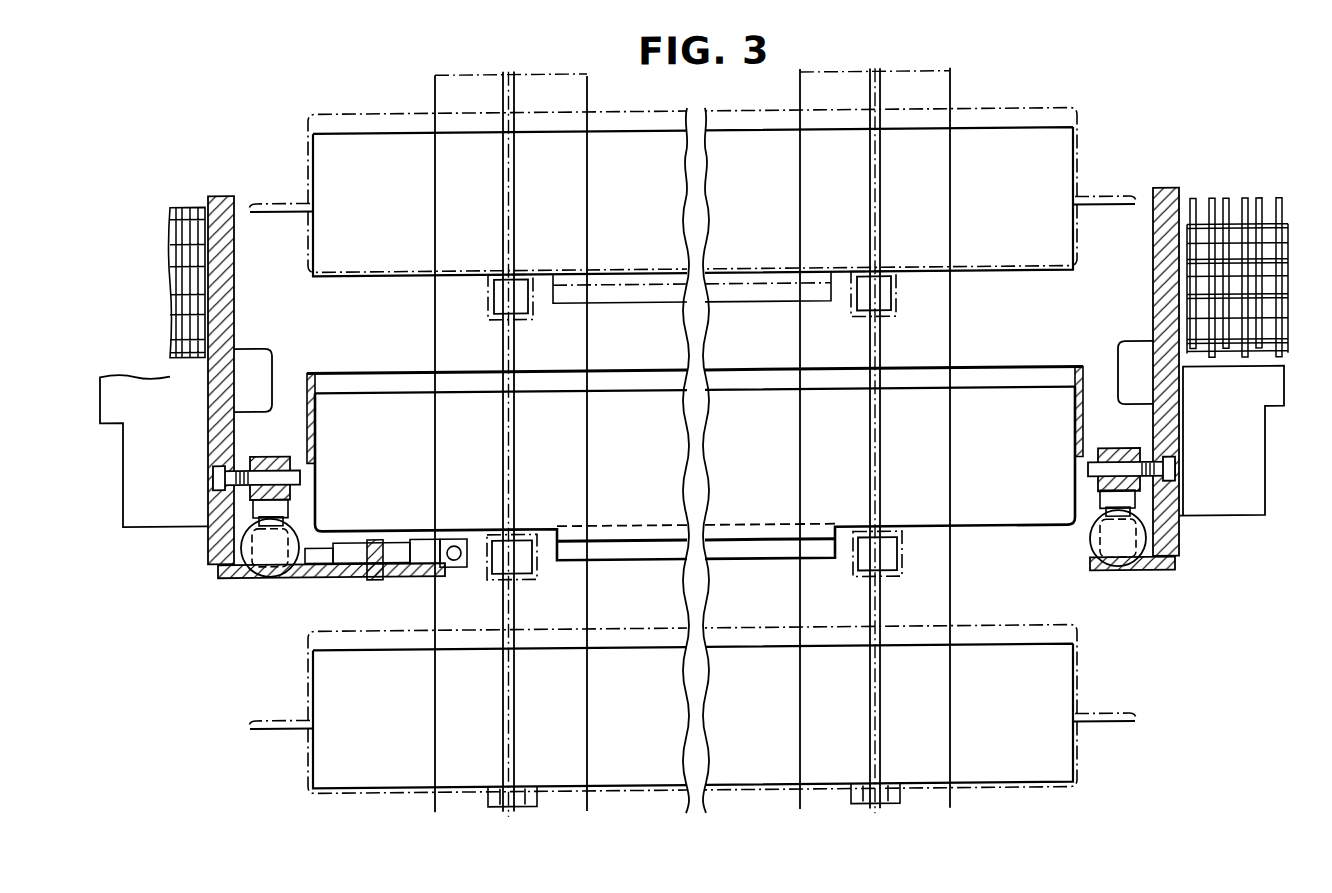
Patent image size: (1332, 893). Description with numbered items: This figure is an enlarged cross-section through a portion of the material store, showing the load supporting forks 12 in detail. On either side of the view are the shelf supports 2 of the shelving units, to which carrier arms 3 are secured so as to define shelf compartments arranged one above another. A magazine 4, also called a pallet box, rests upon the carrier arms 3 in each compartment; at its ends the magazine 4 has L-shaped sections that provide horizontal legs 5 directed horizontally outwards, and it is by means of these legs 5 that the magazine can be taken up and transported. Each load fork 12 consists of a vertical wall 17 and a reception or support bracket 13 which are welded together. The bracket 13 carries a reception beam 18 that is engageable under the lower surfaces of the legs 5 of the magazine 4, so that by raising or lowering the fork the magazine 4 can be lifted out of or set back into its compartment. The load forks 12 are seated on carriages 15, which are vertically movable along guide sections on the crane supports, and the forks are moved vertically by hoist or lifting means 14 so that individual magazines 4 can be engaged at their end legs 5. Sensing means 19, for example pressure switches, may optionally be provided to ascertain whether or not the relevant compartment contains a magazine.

The shelf support 2 is at (437, 88).
The carrier arm 3 is at (492, 298).
The magazine 4 is at (1033, 144).
The horizontal leg 5 is at (276, 204).
The load fork 12 is at (206, 544).
The reception bracket 13 is at (310, 575).
The hoist means 14 is at (172, 268).
The carriage 15 is at (150, 477).
The vertical wall 17 is at (214, 330).
The reception beam 18 is at (299, 498).
The sensing means 19 is at (352, 558).